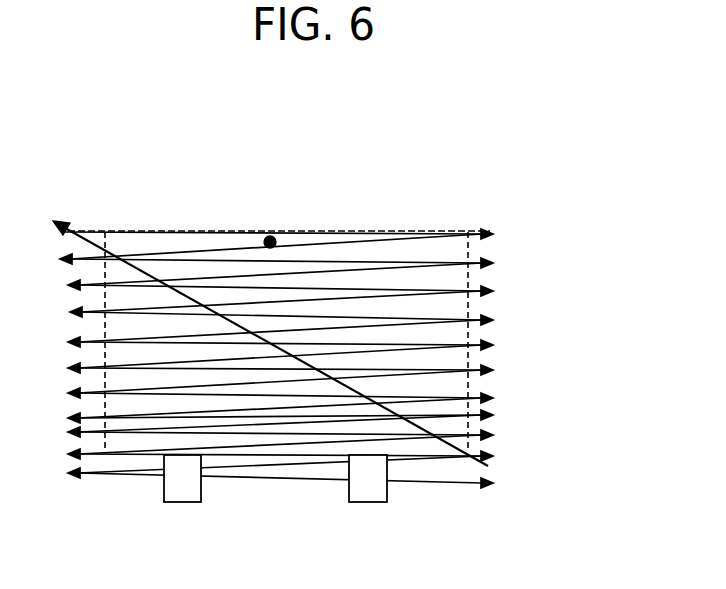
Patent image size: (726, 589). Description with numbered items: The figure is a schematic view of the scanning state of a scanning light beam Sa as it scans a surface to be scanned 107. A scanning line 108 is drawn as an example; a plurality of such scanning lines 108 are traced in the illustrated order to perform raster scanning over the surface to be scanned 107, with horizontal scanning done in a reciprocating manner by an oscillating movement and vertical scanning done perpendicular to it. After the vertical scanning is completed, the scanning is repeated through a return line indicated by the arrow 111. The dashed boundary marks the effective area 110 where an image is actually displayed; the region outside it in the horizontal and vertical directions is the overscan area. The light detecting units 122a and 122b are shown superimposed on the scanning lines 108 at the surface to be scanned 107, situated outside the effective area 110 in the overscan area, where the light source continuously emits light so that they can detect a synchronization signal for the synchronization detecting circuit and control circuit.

The surface to be scanned 107 is at (214, 194).
The scanning line 108 is at (470, 289).
The effective area 110 is at (467, 388).
The return line 111 is at (81, 236).
The scanning light beam Sa is at (276, 238).
The light detecting unit 122a is at (182, 488).
The light detecting unit 122b is at (367, 488).